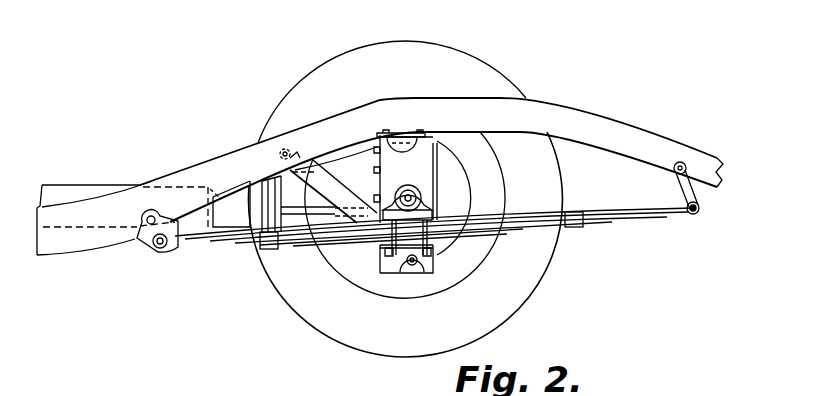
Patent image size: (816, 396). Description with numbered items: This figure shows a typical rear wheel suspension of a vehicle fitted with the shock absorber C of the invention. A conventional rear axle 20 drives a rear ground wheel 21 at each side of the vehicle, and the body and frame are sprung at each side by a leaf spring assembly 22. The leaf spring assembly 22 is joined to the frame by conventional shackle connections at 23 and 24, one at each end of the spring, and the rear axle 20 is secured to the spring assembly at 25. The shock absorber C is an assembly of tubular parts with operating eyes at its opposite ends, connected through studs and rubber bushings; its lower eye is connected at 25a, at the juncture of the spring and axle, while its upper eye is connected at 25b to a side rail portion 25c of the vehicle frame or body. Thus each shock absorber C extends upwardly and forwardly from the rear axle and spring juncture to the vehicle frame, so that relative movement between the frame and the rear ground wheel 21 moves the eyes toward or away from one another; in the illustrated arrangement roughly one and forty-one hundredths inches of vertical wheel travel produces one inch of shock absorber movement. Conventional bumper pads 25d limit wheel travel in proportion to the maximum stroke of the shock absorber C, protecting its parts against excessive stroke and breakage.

The rear axle 20 is at (420, 173).
The rear ground wheel 21 is at (470, 56).
The leaf spring assembly 22 is at (540, 236).
The shackle connection 23 is at (155, 253).
The shackle connection 24 is at (698, 207).
The axle securing point 25 is at (440, 220).
The shock absorber lower connection 25a is at (418, 273).
The shock absorber upper connection 25b is at (280, 148).
The side rail portion 25c is at (229, 155).
The bumper pad 25d is at (403, 133).
The shock absorber C is at (330, 181).